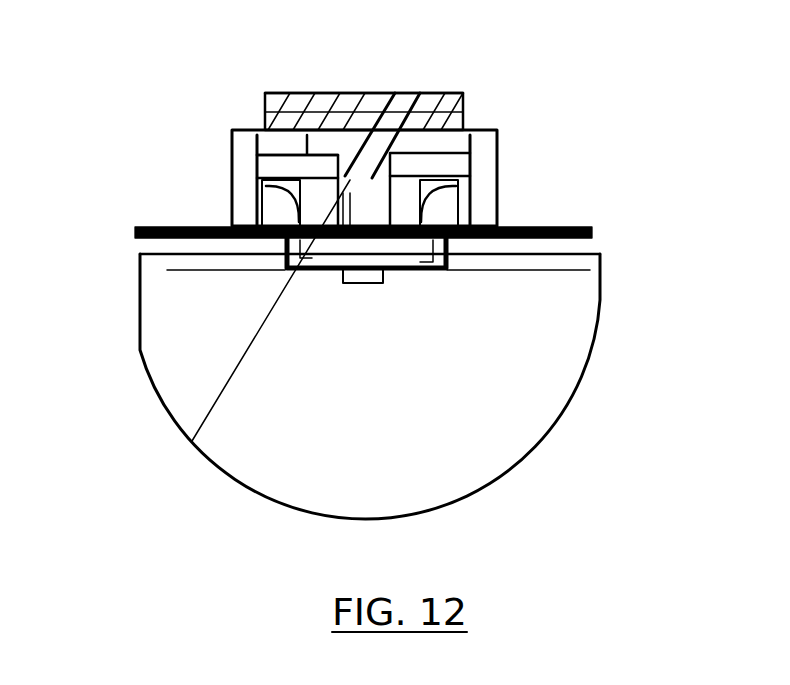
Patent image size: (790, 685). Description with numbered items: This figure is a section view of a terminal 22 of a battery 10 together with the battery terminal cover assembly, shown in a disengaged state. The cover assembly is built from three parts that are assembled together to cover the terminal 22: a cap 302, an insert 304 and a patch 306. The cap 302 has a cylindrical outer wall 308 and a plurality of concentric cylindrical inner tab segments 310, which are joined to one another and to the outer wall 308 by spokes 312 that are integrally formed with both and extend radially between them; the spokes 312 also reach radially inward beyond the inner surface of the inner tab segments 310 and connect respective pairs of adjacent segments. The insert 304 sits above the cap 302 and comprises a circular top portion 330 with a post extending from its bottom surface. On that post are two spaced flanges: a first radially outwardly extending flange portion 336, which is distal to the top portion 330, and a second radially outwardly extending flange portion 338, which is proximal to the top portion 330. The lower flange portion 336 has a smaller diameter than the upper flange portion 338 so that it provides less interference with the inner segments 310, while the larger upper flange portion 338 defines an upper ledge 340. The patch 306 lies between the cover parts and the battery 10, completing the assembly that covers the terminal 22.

The battery 10 is at (130, 352).
The terminal 22 is at (278, 252).
The cap 302 is at (507, 136).
The insert 304 is at (393, 78).
The patch 306 is at (606, 226).
The cylindrical outer wall 308 is at (237, 163).
The cylindrical inner tab segments 310 is at (297, 213).
The spokes 312 is at (300, 152).
The circular top portion 330 is at (298, 97).
The first radially outwardly extending flange portion 336 is at (248, 339).
The second radially outwardly extending flange portion 338 is at (290, 163).
The upper ledge 340 is at (405, 120).